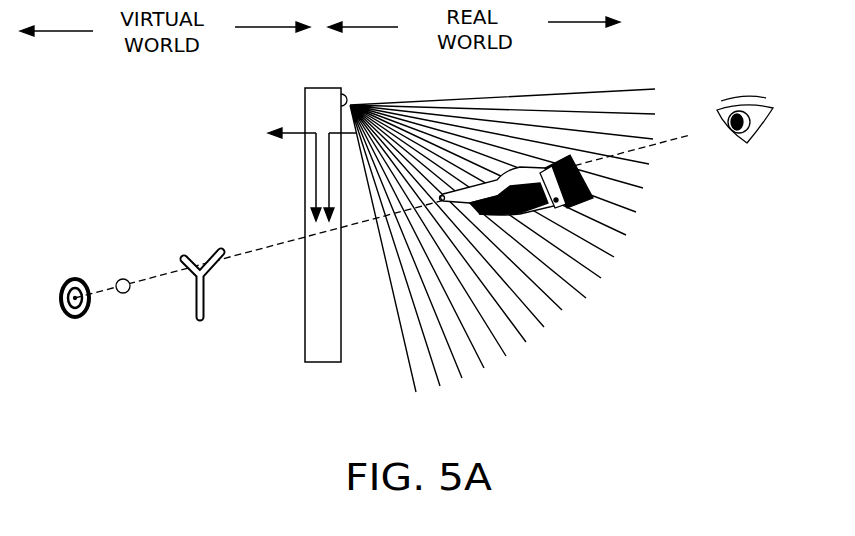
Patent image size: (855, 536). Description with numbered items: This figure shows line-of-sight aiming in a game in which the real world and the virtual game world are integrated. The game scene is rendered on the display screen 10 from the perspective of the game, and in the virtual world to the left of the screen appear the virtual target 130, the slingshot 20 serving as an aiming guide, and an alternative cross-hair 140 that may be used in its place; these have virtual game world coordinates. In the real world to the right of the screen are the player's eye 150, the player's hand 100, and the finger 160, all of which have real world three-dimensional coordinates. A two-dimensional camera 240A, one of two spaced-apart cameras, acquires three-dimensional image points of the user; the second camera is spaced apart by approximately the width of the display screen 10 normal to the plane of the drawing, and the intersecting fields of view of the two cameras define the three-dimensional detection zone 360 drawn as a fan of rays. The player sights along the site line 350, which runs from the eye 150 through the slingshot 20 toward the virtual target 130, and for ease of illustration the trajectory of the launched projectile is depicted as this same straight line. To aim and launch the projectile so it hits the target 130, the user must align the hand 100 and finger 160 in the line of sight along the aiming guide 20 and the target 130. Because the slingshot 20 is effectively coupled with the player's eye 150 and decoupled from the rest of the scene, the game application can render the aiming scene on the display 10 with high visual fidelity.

The display screen 10 is at (348, 312).
The two-dimensional camera 240A is at (347, 98).
The three-dimensional detection zone 360 is at (568, 316).
The site line 350 is at (686, 138).
The player's eye 150 is at (724, 122).
The player's hand 100 is at (523, 212).
The finger 160 is at (442, 203).
The virtual target 130 is at (72, 278).
The cross-hair 140 is at (127, 294).
The slingshot 20 is at (206, 298).